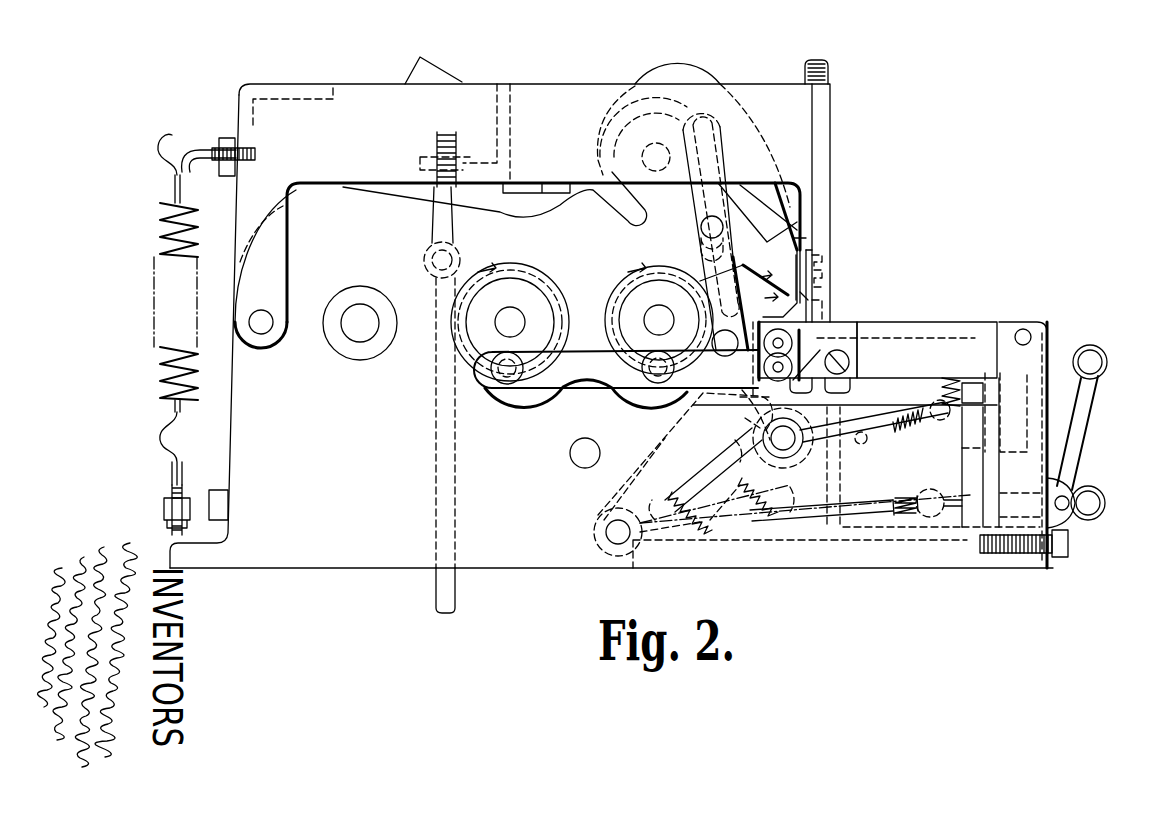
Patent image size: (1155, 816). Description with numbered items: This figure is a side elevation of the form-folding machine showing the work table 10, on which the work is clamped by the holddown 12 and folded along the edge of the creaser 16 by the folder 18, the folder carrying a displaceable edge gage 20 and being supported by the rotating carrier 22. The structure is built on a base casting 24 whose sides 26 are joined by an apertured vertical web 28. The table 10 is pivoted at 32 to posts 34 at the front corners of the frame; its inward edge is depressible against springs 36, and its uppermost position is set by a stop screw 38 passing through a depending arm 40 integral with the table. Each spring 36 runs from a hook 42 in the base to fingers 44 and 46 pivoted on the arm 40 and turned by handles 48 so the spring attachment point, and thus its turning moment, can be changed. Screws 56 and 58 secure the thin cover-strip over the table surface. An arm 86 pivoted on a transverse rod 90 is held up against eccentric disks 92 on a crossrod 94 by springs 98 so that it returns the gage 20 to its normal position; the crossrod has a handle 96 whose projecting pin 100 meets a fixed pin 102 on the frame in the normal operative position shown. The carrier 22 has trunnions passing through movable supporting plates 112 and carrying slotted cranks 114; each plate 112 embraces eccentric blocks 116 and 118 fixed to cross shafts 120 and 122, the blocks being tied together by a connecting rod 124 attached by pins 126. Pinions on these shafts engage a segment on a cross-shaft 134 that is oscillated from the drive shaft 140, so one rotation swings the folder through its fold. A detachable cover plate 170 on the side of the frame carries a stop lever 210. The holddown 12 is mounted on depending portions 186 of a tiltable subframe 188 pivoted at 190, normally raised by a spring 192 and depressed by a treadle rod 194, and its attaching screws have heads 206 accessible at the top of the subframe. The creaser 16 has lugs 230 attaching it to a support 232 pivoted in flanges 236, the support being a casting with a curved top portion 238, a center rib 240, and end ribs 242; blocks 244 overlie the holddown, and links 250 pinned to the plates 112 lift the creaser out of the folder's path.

The table 10 is at (961, 327).
The holddown 12 is at (815, 311).
The creaser 16 is at (803, 297).
The folder 18 is at (772, 327).
The edge gage 20 is at (763, 370).
The carrier 22 is at (857, 338).
The base casting 24 is at (890, 543).
The sides 26 is at (313, 548).
The apertured vertical web 28 is at (841, 477).
The table pivot 32 is at (1024, 329).
The posts 34 is at (1012, 470).
The springs 36 is at (908, 437).
The stop screw 38 is at (985, 557).
The depending arm 40 is at (1006, 412).
The hook 42 is at (660, 505).
The finger 44 is at (980, 389).
The finger 46 is at (967, 532).
The handles 48 is at (1094, 359).
The screws 56 is at (850, 356).
The screws 58 is at (850, 384).
The arm 86 is at (664, 438).
The rod 90 is at (607, 533).
The eccentric disks 92 is at (733, 443).
The crossrod 94 is at (781, 442).
The handle 96 is at (893, 423).
The springs 98 is at (748, 540).
The projecting pin 100 is at (745, 403).
The fixed pin 102 is at (740, 425).
The supporting plates 112 is at (571, 306).
The cranks 114 is at (793, 335).
The eccentric block 116 is at (685, 317).
The eccentric block 118 is at (530, 322).
The shaft 120 is at (657, 320).
The shaft 122 is at (512, 306).
The connecting rod 124 is at (583, 372).
The pins 126 is at (490, 395).
The cross-shaft 134 is at (583, 457).
The drive shaft 140 is at (356, 303).
The cover plate 170 is at (495, 200).
The depending portions 186 is at (820, 210).
The subframe 188 is at (522, 101).
The subframe pivot 190 is at (261, 334).
The spring 192 is at (170, 350).
The treadle rod 194 is at (453, 592).
The screw heads 206 is at (830, 66).
The lever 210 is at (424, 70).
The lugs 230 is at (800, 257).
The support 232 is at (793, 240).
The flanges 236 is at (615, 168).
The curved top portion 238 is at (614, 105).
The center rib 240 is at (674, 70).
The end ribs 242 is at (803, 203).
The blocks 244 is at (825, 270).
The links 250 is at (807, 253).